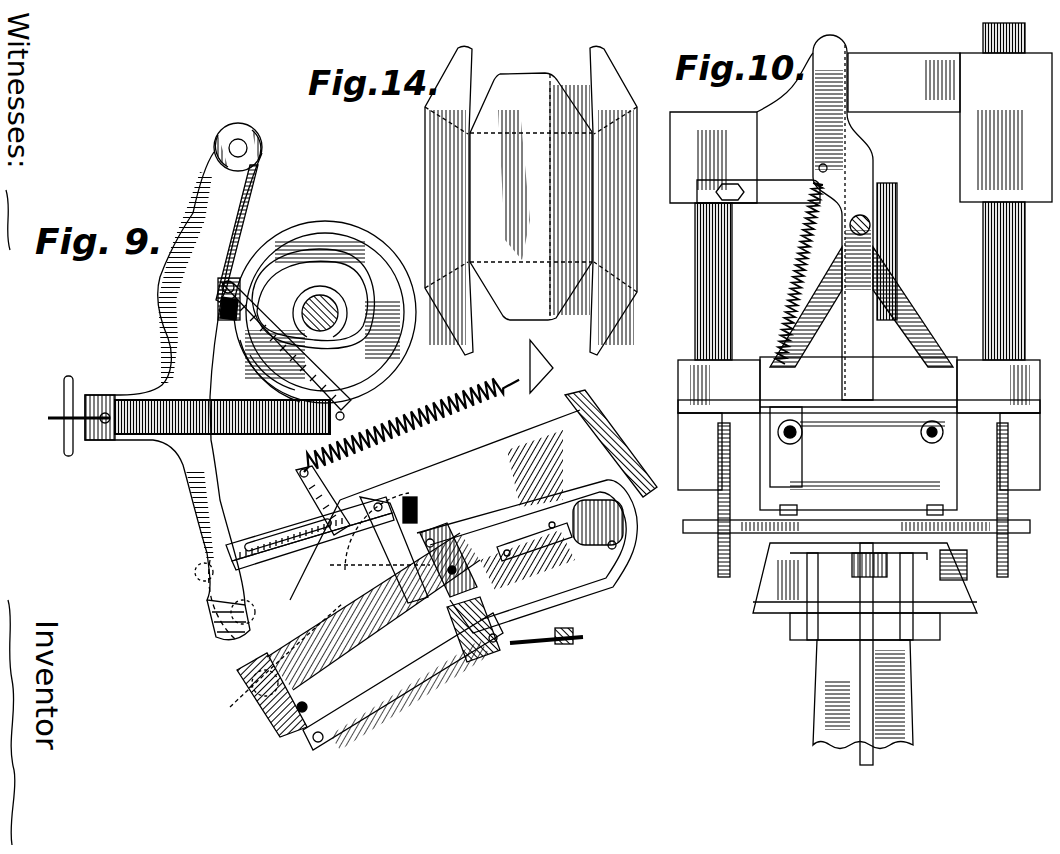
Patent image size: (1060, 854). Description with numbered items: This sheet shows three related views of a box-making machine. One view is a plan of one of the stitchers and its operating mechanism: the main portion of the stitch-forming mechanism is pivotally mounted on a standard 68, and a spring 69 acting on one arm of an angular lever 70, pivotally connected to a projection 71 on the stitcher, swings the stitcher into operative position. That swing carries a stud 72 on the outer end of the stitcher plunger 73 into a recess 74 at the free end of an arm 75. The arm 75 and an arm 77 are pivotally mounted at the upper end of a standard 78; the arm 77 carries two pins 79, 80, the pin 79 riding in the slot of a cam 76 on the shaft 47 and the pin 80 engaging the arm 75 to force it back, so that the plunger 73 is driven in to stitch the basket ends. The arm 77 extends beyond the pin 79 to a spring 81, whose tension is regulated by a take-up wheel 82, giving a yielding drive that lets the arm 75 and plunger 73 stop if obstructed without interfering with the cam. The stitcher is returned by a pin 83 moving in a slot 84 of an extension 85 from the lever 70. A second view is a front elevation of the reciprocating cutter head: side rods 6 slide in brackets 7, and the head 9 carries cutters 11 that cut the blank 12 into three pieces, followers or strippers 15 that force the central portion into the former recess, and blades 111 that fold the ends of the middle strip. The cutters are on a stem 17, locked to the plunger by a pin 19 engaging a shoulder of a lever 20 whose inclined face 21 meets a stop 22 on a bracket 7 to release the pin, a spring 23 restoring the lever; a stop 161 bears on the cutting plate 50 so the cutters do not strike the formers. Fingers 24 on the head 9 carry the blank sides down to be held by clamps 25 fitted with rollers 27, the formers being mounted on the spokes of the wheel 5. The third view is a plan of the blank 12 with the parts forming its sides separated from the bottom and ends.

In FIG. 9, the arm 75 is at (214, 496).
In FIG. 9, the standard 78 is at (238, 139).
In FIG. 9, the arm 77 is at (254, 184).
In FIG. 9, the pin 80 is at (222, 289).
In FIG. 9, the pin 79 is at (231, 320).
In FIG. 9, the cam 76 is at (365, 245).
In FIG. 9, the shaft 47 is at (320, 295).
In FIG. 9, the take-up wheel 82 is at (81, 426).
In FIG. 9, the spring 81 is at (222, 423).
In FIG. 9, the spring 69 is at (425, 407).
In FIG. 9, the angular lever 70 is at (316, 500).
In FIG. 9, the extension 85 is at (255, 548).
In FIG. 9, the slot 84 is at (276, 563).
In FIG. 9, the pin 83 is at (200, 578).
In FIG. 9, the recess 74 is at (232, 640).
In FIG. 9, the standard 68 is at (405, 558).
In FIG. 9, the stud 72 is at (261, 698).
In FIG. 9, the plunger 73 is at (376, 708).
In FIG. 9, the projection 71 is at (384, 537).
In FIG. 10, the projection 71 is at (904, 82).
In FIG. 14, the blank 12 is at (531, 200).
In FIG. 10, the side rods 6 is at (985, 286).
In FIG. 10, the brackets 7 is at (993, 127).
In FIG. 10, the lever 20 is at (840, 55).
In FIG. 10, the rod or stem 17 is at (877, 234).
In FIG. 10, the stop 22 is at (758, 201).
In FIG. 10, the inclined face or shoulder 21 is at (818, 174).
In FIG. 10, the spring 23 is at (796, 285).
In FIG. 10, the pin 19 is at (876, 372).
In FIG. 10, the head 9 is at (678, 405).
In FIG. 10, the blades or cutters 11 is at (858, 433).
In FIG. 10, the stop 161 is at (860, 438).
In FIG. 10, the followers or strippers 15 is at (800, 513).
In FIG. 10, the blades 111 is at (775, 518).
In FIG. 10, the cutting-plate 50 is at (861, 545).
In FIG. 10, the fingers 24 is at (852, 507).
In FIG. 10, the clamps 25 is at (768, 596).
In FIG. 10, the rollers 27 is at (858, 612).
In FIG. 10, the wheel 5 is at (870, 654).